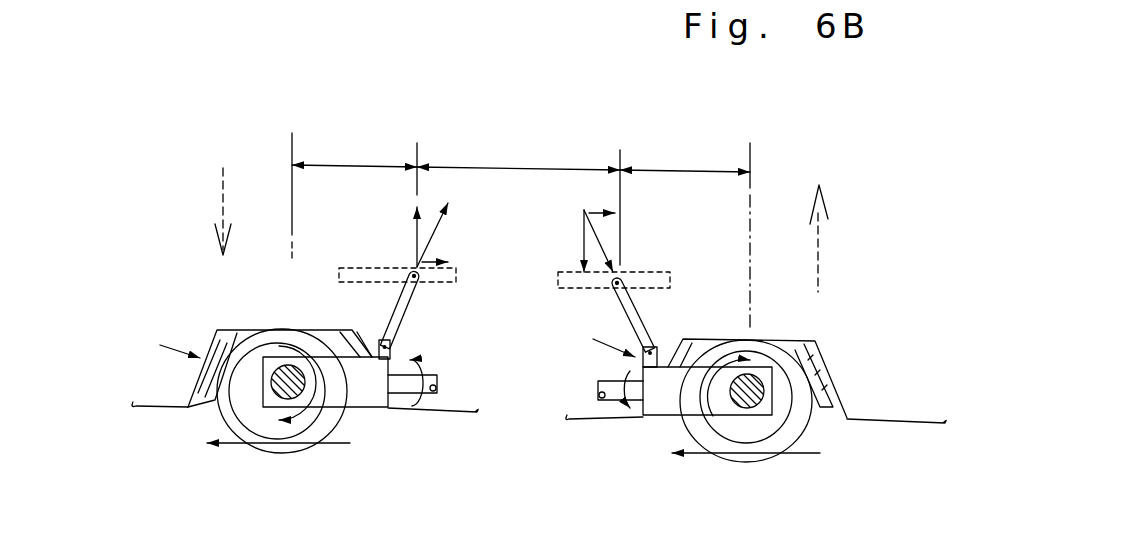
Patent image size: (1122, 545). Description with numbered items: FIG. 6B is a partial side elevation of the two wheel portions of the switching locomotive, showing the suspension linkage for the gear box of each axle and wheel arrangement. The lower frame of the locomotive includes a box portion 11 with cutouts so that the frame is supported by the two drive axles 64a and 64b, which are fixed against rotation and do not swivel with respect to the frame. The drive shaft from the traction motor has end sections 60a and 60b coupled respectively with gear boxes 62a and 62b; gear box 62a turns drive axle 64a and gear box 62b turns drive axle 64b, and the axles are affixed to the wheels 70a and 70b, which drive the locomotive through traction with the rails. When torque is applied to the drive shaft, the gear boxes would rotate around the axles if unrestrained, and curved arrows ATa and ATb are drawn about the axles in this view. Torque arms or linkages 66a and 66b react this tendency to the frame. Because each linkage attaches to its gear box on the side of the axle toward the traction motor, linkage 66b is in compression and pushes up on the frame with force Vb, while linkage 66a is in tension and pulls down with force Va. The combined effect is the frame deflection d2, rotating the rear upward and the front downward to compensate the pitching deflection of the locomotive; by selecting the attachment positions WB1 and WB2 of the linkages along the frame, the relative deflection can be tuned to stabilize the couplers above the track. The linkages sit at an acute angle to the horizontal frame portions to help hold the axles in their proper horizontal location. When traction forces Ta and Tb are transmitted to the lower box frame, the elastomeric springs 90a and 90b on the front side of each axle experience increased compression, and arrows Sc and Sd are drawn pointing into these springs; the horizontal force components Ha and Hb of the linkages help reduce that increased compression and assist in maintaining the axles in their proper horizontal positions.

The box portion 11 is at (583, 420).
The drive shaft end section 60a is at (410, 363).
The drive shaft end section 60b is at (608, 380).
The gear box 62a is at (368, 408).
The gear box 62b is at (663, 417).
The drive axle 64a is at (272, 373).
The drive axle 64b is at (756, 370).
The torque arm or linkage 66a is at (384, 330).
The torque arm or linkage 66b is at (646, 332).
The wheel 70a is at (273, 453).
The wheel 70b is at (773, 460).
The spring 90a is at (212, 340).
The spring 90b is at (821, 368).
The steering force front Sc is at (163, 335).
The steering force rear Sd is at (590, 339).
The traction force Ta is at (261, 458).
The traction force Tb is at (736, 471).
The axle torque front ATa is at (300, 410).
The axle torque rear ATb is at (743, 425).
The force Va is at (408, 235).
The horizontal force component Ha is at (453, 252).
The force Vb is at (577, 241).
The horizontal force component Hb is at (623, 225).
The position of linkage attachment WB1 is at (521, 231).
The position of linkage attachment WB2 is at (518, 203).
The deflection d2 is at (504, 230).